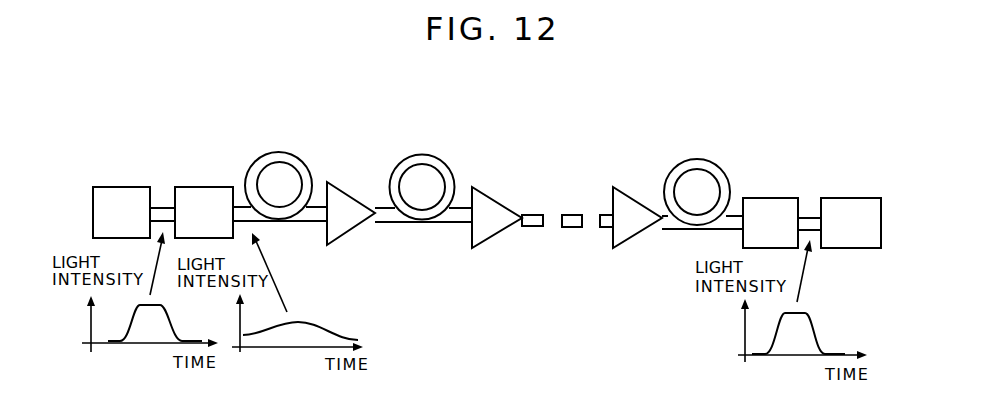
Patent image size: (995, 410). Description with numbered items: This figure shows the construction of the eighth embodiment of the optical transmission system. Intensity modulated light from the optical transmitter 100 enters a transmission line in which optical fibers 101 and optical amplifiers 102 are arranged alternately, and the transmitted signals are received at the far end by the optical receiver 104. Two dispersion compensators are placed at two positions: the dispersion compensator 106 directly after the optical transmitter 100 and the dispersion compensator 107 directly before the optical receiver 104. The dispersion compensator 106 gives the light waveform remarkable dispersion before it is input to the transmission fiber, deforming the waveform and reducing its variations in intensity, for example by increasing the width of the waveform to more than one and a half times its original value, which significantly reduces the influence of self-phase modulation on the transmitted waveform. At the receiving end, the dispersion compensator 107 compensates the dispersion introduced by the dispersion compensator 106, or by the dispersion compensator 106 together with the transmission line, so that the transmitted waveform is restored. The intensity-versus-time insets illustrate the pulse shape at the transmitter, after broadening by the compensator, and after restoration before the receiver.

The optical transmitter 100 is at (122, 188).
The dispersion compensator 106 is at (205, 188).
The optical fiber 101 is at (280, 156).
The optical amplifier 102 is at (489, 200).
The dispersion compensator 107 is at (770, 199).
The optical receiver 104 is at (850, 199).